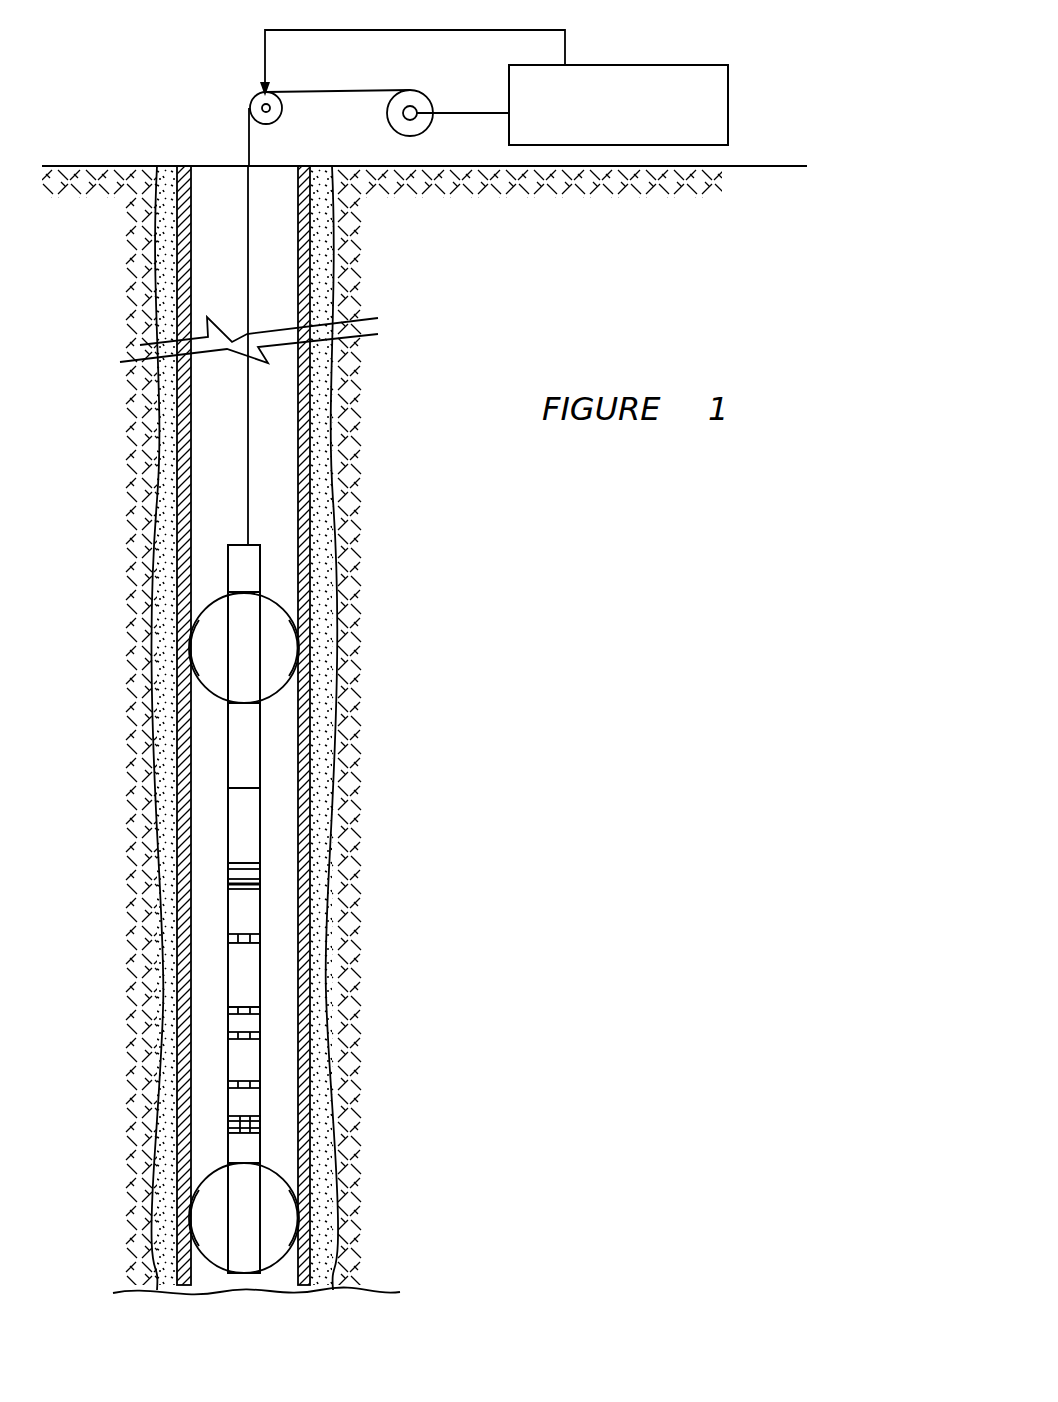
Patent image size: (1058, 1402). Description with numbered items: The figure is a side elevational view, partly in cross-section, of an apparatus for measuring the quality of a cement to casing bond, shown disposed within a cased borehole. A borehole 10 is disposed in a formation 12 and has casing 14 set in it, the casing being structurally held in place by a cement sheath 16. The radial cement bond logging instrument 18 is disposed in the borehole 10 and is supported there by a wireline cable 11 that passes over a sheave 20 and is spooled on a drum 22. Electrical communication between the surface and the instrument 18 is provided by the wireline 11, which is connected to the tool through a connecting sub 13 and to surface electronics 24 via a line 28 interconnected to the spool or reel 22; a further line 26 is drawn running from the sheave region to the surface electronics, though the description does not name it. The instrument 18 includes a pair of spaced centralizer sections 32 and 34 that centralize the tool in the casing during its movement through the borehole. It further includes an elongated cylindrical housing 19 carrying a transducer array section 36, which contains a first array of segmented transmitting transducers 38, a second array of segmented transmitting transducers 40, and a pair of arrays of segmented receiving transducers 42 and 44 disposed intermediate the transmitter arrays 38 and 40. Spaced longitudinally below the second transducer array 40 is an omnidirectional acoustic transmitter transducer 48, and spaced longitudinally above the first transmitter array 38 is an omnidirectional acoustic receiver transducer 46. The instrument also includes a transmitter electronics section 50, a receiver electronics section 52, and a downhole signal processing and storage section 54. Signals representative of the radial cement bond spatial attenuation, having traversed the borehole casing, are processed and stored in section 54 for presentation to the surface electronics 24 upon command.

The borehole 10 is at (270, 517).
The wireline cable 11 is at (243, 403).
The formation 12 is at (79, 584).
The connecting sub 13 is at (252, 570).
The casing 14 is at (300, 717).
The cement sheath 16 is at (163, 737).
The radial cement bond logging instrument 18 is at (265, 868).
The elongated cylindrical housing 19 is at (227, 803).
The sheave 20 is at (250, 110).
The drum 22 is at (415, 96).
The surface electronics 24 is at (642, 64).
The depth signal line 26 is at (263, 30).
The line 28 is at (472, 114).
The centralizer section 32 is at (297, 1202).
The centralizer section 34 is at (290, 622).
The transducer array section 36 is at (260, 978).
The first array of segmented transmitting transducers 38 is at (265, 937).
The second array of segmented transmitting transducers 40 is at (265, 1083).
The array of segmented receiving transducers 42 is at (225, 1010).
The array of segmented receiving transducers 44 is at (225, 1037).
The omnidirectional acoustic receiver transducer 46 is at (225, 885).
The omnidirectional acoustic transmitter transducer 48 is at (225, 1117).
The transmitter electronics section 50 is at (247, 1153).
The receiver electronics section 52 is at (248, 835).
The downhole signal processing and storage section 54 is at (245, 768).